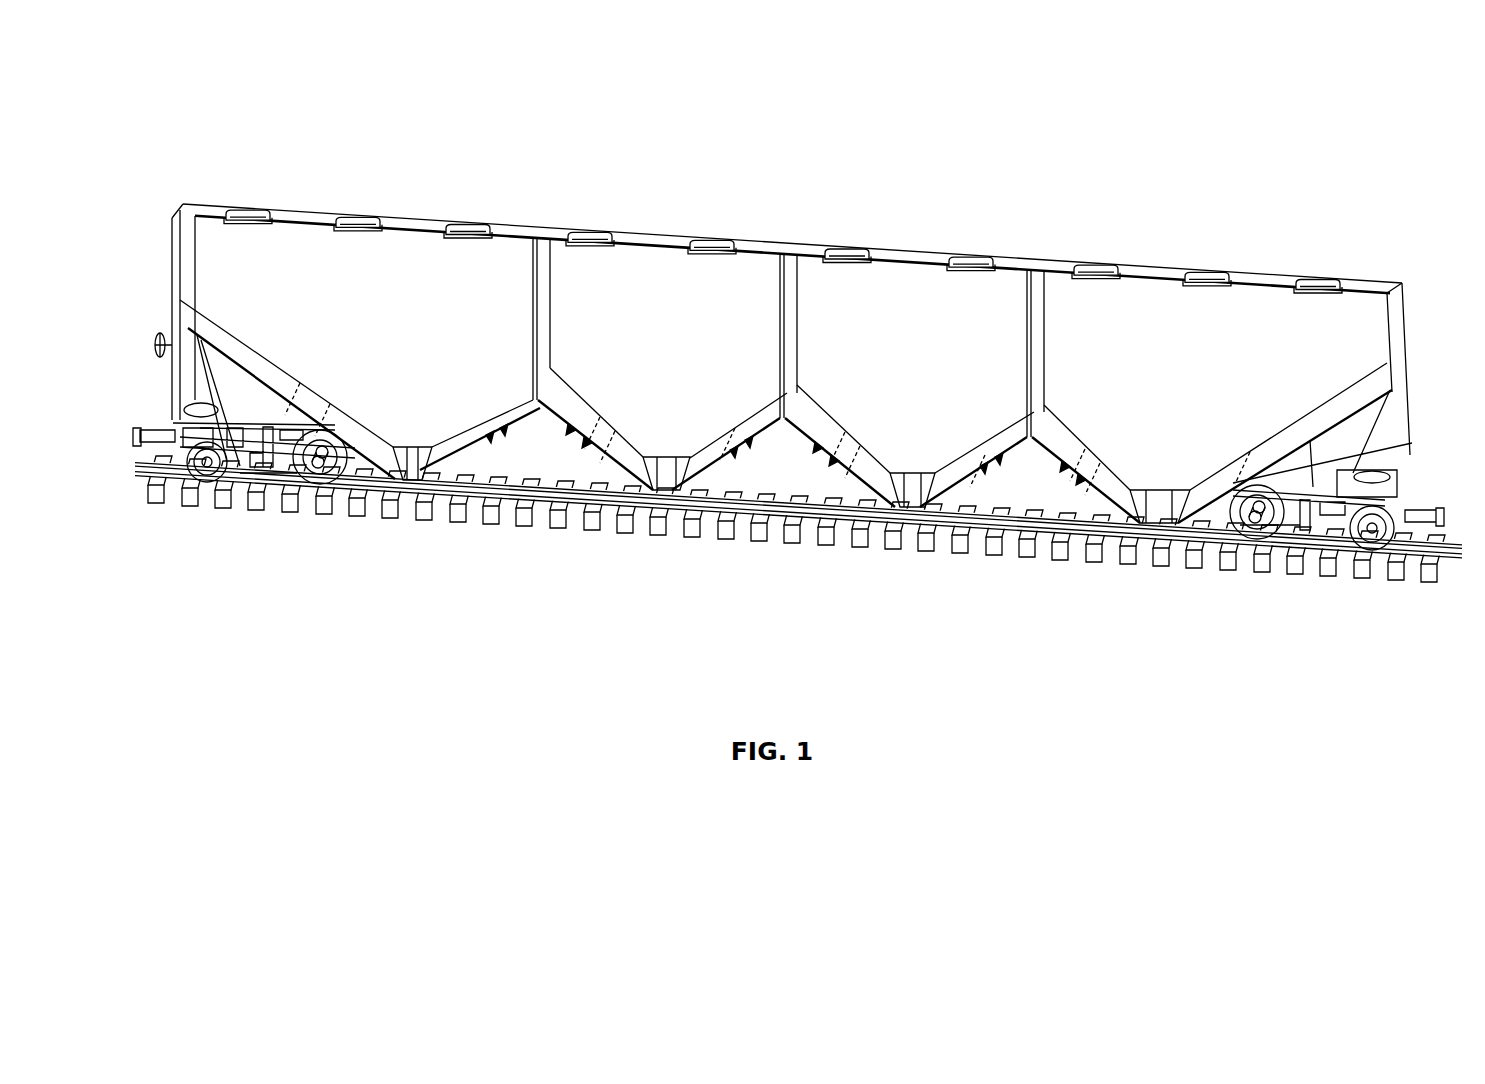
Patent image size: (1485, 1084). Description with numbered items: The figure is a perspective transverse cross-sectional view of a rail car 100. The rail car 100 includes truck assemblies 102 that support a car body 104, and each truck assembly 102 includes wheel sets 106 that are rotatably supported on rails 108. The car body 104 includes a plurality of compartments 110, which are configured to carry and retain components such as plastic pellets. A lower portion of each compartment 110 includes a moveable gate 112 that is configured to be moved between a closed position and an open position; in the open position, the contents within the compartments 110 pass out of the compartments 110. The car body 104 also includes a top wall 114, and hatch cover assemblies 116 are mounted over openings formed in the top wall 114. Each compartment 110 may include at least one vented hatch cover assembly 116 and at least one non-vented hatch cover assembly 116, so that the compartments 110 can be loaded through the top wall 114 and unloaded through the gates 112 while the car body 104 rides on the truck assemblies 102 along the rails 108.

The rail car 100 is at (186, 146).
The truck assembly 102 is at (187, 480).
The car body 104 is at (788, 380).
The wheel set 106 is at (218, 472).
The rail 108 is at (450, 500).
The compartment 110 is at (405, 283).
The moveable gate 112 is at (392, 478).
The top wall 114 is at (299, 204).
The hatch cover assembly 116 is at (252, 210).